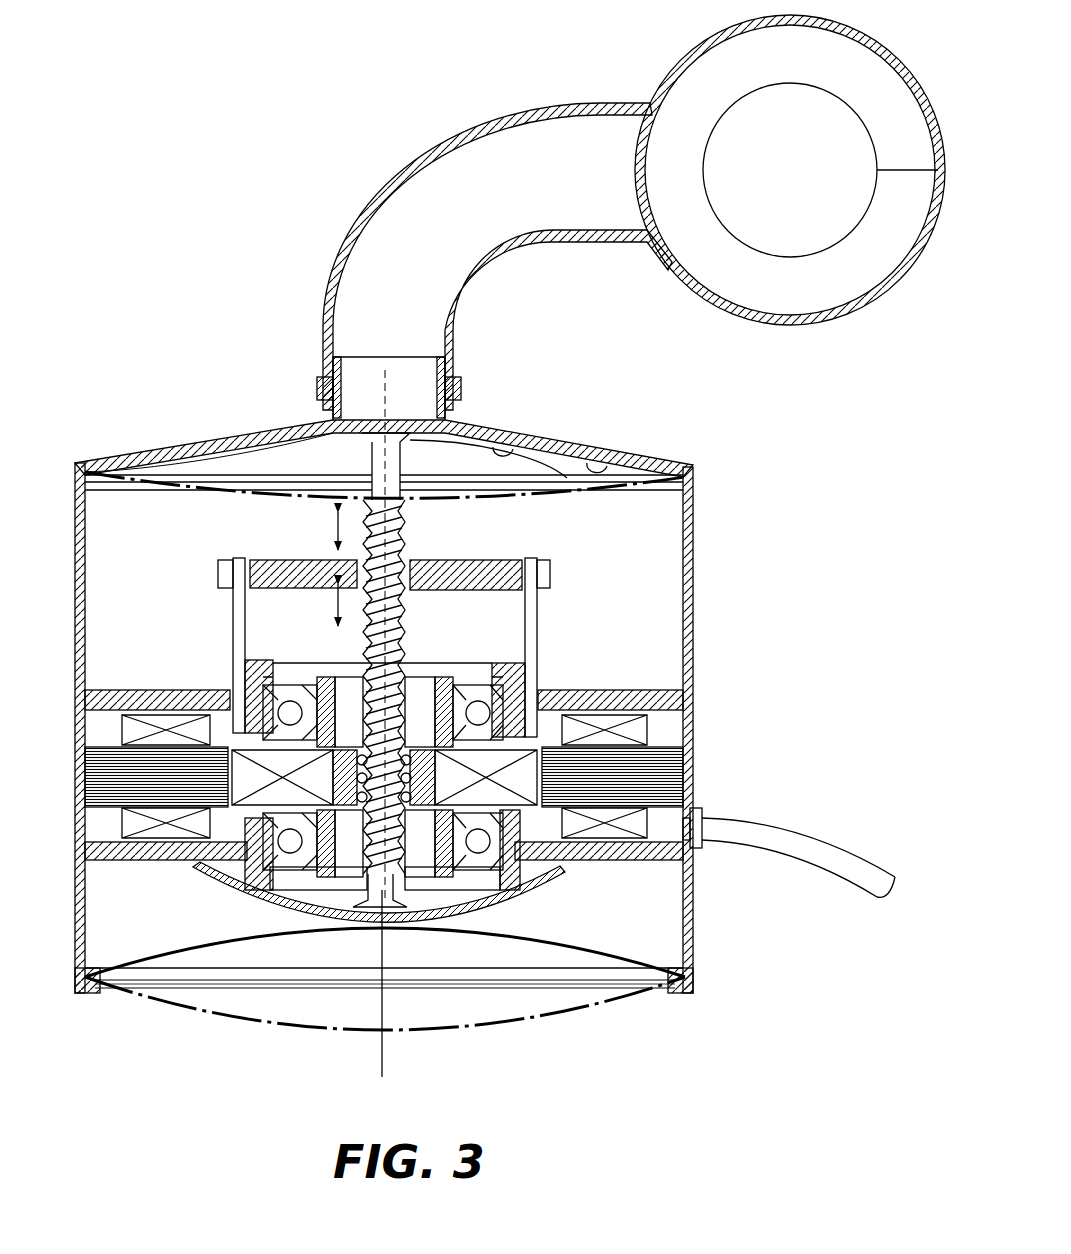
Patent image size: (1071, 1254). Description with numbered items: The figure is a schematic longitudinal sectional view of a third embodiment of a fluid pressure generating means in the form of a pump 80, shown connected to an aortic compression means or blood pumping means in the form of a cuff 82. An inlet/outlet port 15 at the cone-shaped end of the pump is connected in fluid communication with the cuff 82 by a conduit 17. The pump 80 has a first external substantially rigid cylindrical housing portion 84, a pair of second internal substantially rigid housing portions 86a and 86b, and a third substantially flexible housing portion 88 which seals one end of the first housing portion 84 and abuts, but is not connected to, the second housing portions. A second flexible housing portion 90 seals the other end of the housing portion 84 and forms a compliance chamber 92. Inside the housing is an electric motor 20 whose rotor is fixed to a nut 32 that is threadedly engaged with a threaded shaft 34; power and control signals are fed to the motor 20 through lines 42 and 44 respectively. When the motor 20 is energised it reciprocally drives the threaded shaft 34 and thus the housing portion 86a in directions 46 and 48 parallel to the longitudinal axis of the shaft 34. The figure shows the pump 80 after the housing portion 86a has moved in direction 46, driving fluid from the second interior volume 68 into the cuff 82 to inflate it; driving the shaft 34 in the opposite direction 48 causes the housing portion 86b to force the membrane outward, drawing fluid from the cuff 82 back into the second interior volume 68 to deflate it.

The pump 80 is at (182, 378).
The cuff 82 is at (665, 70).
The conduit 17 is at (428, 152).
The inlet/outlet port 15 is at (340, 393).
The first external substantially rigid cylindrical housing portion 84 is at (693, 673).
The third substantially flexible housing portion 88 is at (623, 452).
The second internal substantially rigid housing portion 86a is at (540, 437).
The second internal substantially rigid housing portion 86b is at (537, 893).
The second interior volume 68 is at (185, 463).
The direction 46 is at (333, 538).
The direction 48 is at (333, 617).
The electric motor 20 is at (553, 630).
The threaded shaft 34 is at (407, 632).
The nut 32 is at (420, 706).
The line 42 is at (789, 824).
The line 44 is at (747, 827).
The second flexible housing portion 90 is at (587, 957).
The compliance chamber 92 is at (385, 967).